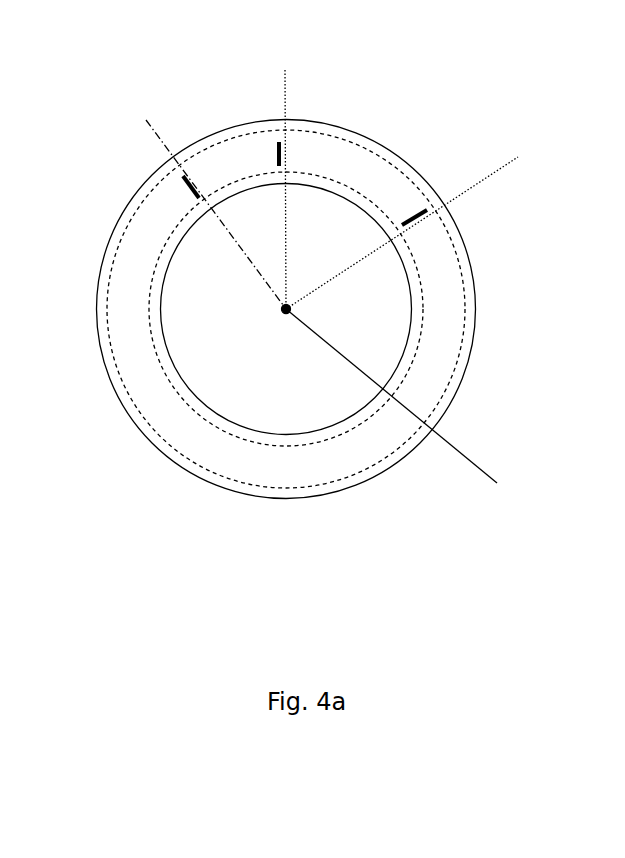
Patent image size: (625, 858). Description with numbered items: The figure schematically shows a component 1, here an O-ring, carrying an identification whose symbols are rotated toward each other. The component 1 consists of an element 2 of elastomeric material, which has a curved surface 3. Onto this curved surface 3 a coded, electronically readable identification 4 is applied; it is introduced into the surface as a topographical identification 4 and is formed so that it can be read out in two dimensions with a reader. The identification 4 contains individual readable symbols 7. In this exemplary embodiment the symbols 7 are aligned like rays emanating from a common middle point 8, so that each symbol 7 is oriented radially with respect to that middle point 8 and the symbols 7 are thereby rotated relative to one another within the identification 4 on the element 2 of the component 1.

The component 1 is at (110, 533).
The element 2 is at (473, 352).
The curved surface 3 is at (394, 189).
The identification 4 is at (148, 217).
The symbols 7 is at (191, 186).
The common middle point 8 is at (398, 411).